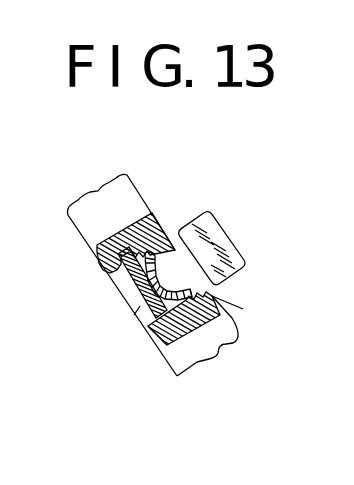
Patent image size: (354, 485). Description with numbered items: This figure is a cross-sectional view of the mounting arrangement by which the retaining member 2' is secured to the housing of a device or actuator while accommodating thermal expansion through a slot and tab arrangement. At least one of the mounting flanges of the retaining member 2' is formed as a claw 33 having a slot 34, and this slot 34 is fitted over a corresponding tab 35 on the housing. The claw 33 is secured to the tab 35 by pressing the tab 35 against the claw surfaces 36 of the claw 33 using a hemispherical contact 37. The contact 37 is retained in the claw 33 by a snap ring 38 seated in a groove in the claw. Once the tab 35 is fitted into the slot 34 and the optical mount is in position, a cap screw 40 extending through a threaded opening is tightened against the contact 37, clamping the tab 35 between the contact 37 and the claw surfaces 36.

The retaining member 2' is at (133, 247).
The claw 33 is at (196, 362).
The slot 34 is at (243, 309).
The tab 35 is at (134, 315).
The claw surfaces 36 is at (148, 330).
The hemispherical contact 37 is at (140, 304).
The snap ring 38 is at (216, 302).
The cap screw 40 is at (213, 240).